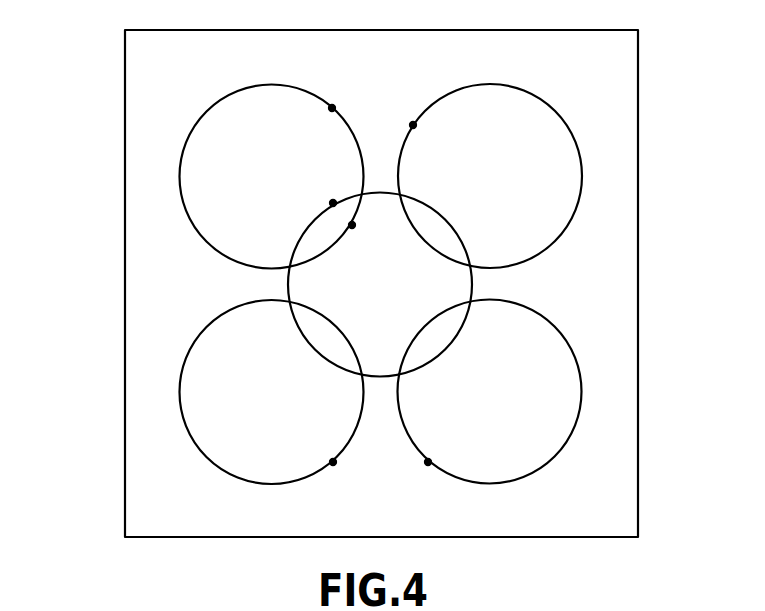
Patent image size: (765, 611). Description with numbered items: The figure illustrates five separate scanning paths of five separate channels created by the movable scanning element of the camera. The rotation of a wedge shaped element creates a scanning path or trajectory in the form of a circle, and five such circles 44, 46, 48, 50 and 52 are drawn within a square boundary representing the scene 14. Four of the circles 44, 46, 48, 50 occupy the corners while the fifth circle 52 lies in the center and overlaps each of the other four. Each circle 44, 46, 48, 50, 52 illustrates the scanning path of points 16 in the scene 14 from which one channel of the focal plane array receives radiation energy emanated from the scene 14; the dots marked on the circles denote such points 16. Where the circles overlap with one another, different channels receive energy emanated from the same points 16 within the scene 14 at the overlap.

The scene 14 is at (112, 273).
The points 16 is at (333, 108).
The circle 44 is at (195, 125).
The circle 46 is at (550, 105).
The circle 48 is at (194, 447).
The circle 50 is at (583, 393).
The circle 52 is at (472, 285).